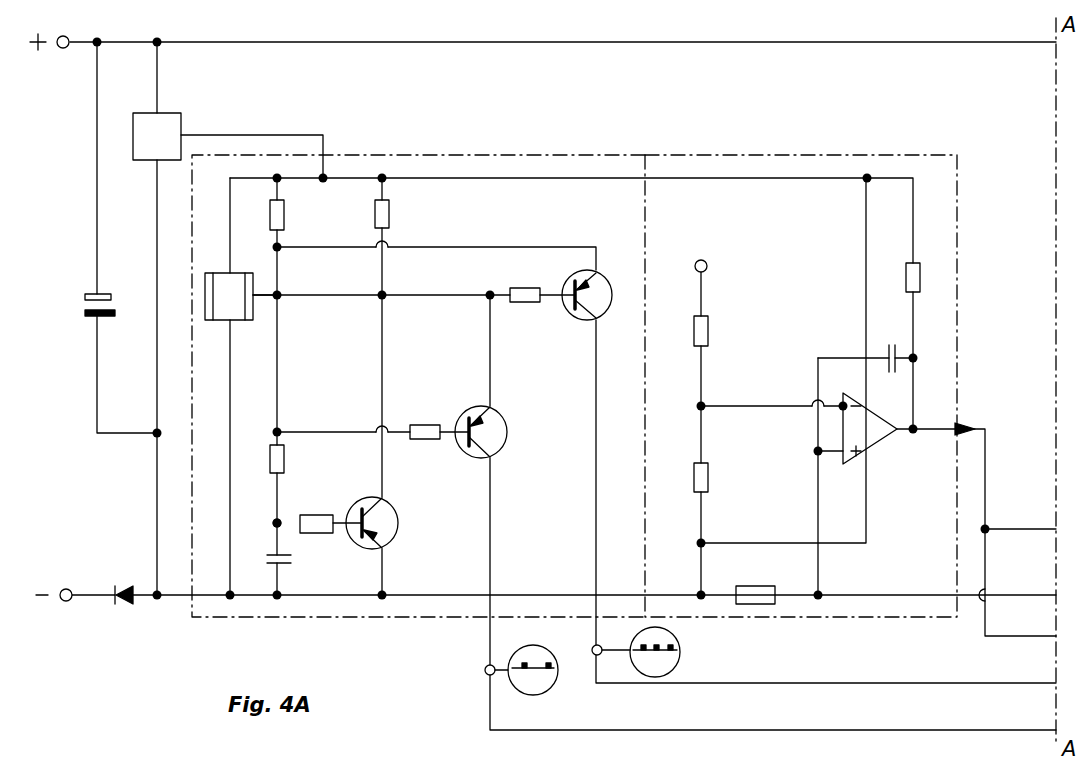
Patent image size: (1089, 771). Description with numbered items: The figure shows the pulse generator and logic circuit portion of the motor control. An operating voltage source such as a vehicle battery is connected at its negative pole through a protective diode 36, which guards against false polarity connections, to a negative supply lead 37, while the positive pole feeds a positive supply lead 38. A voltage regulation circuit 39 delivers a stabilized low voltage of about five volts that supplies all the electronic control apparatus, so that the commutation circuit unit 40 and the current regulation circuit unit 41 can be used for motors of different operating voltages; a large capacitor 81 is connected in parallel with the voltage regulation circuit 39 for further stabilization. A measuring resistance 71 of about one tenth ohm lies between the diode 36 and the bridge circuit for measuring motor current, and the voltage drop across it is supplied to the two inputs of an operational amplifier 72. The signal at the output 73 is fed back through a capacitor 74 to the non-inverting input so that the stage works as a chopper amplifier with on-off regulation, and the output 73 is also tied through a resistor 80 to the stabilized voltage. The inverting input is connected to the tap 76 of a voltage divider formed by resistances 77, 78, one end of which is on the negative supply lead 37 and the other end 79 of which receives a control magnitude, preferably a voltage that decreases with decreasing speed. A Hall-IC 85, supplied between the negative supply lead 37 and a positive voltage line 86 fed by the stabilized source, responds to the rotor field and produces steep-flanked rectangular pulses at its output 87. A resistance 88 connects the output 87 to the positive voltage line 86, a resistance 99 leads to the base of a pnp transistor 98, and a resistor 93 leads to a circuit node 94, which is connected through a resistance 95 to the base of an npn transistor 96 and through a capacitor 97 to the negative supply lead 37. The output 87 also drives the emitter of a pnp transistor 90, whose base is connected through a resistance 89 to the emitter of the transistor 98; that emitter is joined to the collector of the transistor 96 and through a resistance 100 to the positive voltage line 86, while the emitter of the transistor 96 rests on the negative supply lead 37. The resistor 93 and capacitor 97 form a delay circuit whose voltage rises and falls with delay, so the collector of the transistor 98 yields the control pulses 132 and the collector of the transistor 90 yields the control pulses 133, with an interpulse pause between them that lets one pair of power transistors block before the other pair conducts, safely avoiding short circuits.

The protective diode 36 is at (125, 606).
The negative supply lead 37 is at (415, 596).
The positive supply lead 38 is at (438, 42).
The voltage regulation circuit 39 is at (160, 118).
The commutation circuit unit 40 is at (470, 155).
The current regulation circuit unit 41 is at (755, 155).
The measuring resistance 71 is at (756, 592).
The operational amplifier 72 is at (870, 442).
The output of the operational amplifier 73 is at (916, 428).
The capacitor 74 is at (891, 343).
The tap of the voltage divider 76 is at (705, 404).
The voltage divider resistance 77 is at (708, 480).
The voltage divider resistance 78 is at (708, 332).
The terminal 79 is at (708, 266).
The resistor 80 is at (920, 277).
The capacitor 81 is at (112, 298).
The Hall-IC 85 is at (220, 272).
The positive voltage line 86 is at (455, 178).
The output of the Hall-IC 87 is at (280, 297).
The resistance 88 is at (284, 216).
The resistance 89 is at (524, 302).
The pnp transistor 90 is at (598, 282).
The resistor 93 is at (284, 460).
The circuit node 94 is at (280, 521).
The resistance 95 is at (318, 527).
The npn transistor 96 is at (386, 518).
The capacitor 97 is at (272, 554).
The pnp transistor 98 is at (508, 430).
The resistance 99 is at (432, 425).
The resistance 100 is at (389, 214).
The control pulses 132 is at (535, 660).
The control pulses 133 is at (675, 640).